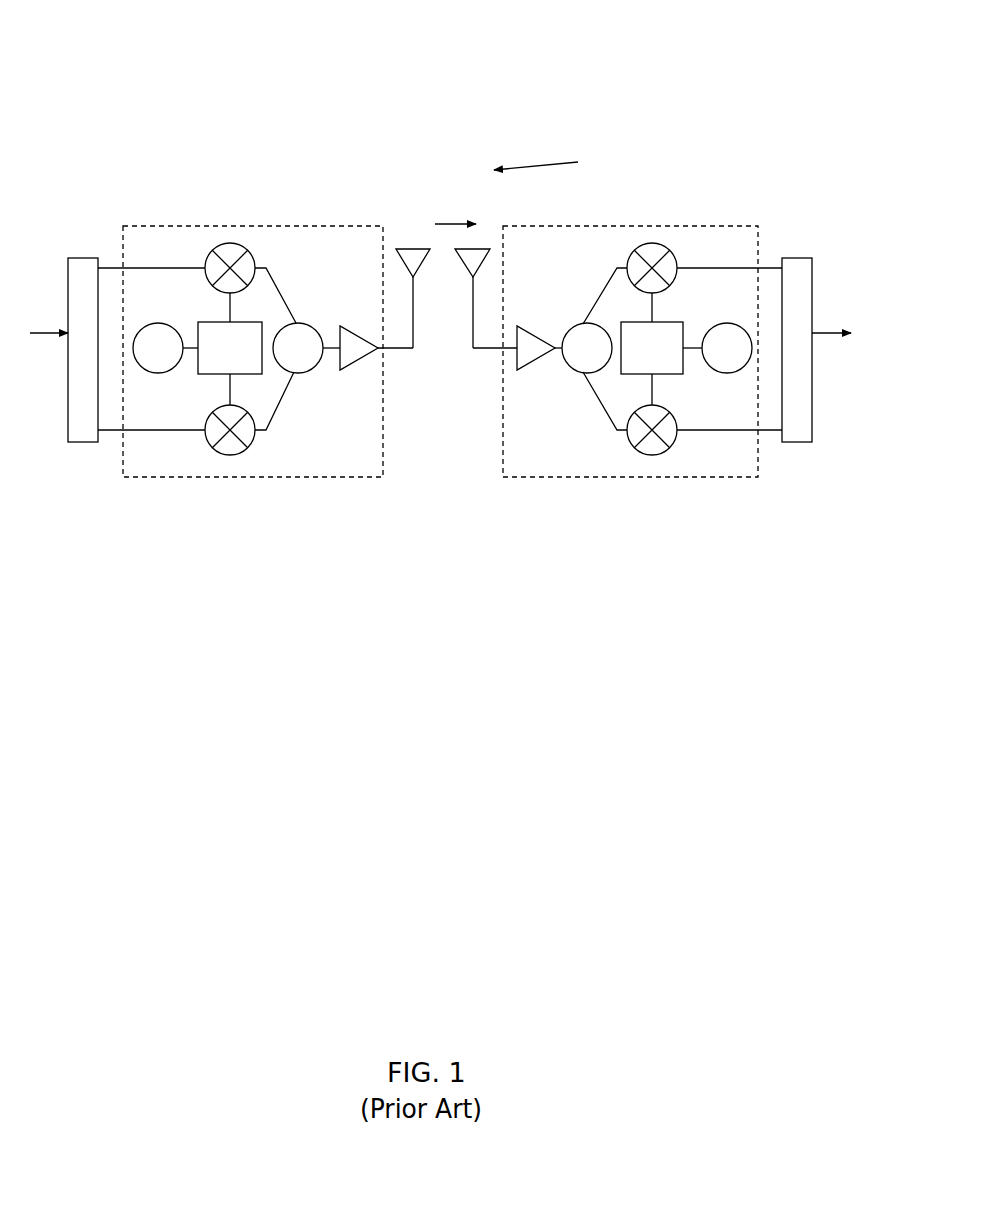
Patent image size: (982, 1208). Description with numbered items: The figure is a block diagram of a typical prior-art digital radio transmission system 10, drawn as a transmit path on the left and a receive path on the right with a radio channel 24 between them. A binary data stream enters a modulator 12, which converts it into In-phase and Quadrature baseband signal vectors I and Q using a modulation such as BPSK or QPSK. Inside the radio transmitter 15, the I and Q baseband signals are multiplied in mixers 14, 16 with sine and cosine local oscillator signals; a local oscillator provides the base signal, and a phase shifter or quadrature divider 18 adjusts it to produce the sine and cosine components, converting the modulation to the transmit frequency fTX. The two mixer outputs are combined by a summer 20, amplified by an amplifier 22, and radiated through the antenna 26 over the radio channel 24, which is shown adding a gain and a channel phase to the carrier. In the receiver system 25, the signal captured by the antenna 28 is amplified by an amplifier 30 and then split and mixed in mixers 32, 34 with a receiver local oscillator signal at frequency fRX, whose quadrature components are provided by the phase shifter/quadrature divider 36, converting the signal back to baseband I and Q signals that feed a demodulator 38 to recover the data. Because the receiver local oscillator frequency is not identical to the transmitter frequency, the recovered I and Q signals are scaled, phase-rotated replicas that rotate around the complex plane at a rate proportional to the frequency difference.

The radio transmission system 10 is at (581, 32).
The modulator 12 is at (77, 442).
The mixer 14 is at (220, 244).
The radio transmitter 15 is at (242, 477).
The mixer 16 is at (203, 442).
The phase shifter or quadrature divider 18 is at (206, 322).
The summer 20 is at (317, 321).
The amplifier 22 is at (357, 362).
The radio channel 24 is at (543, 169).
The receiver system 25 is at (580, 477).
The antenna 26 is at (413, 335).
The antenna 28 is at (473, 318).
The amplifier 30 is at (543, 338).
The mixer 32 is at (655, 243).
The mixer 34 is at (675, 440).
The phase shifter/quadrature divider 36 is at (665, 322).
The demodulator 38 is at (808, 442).